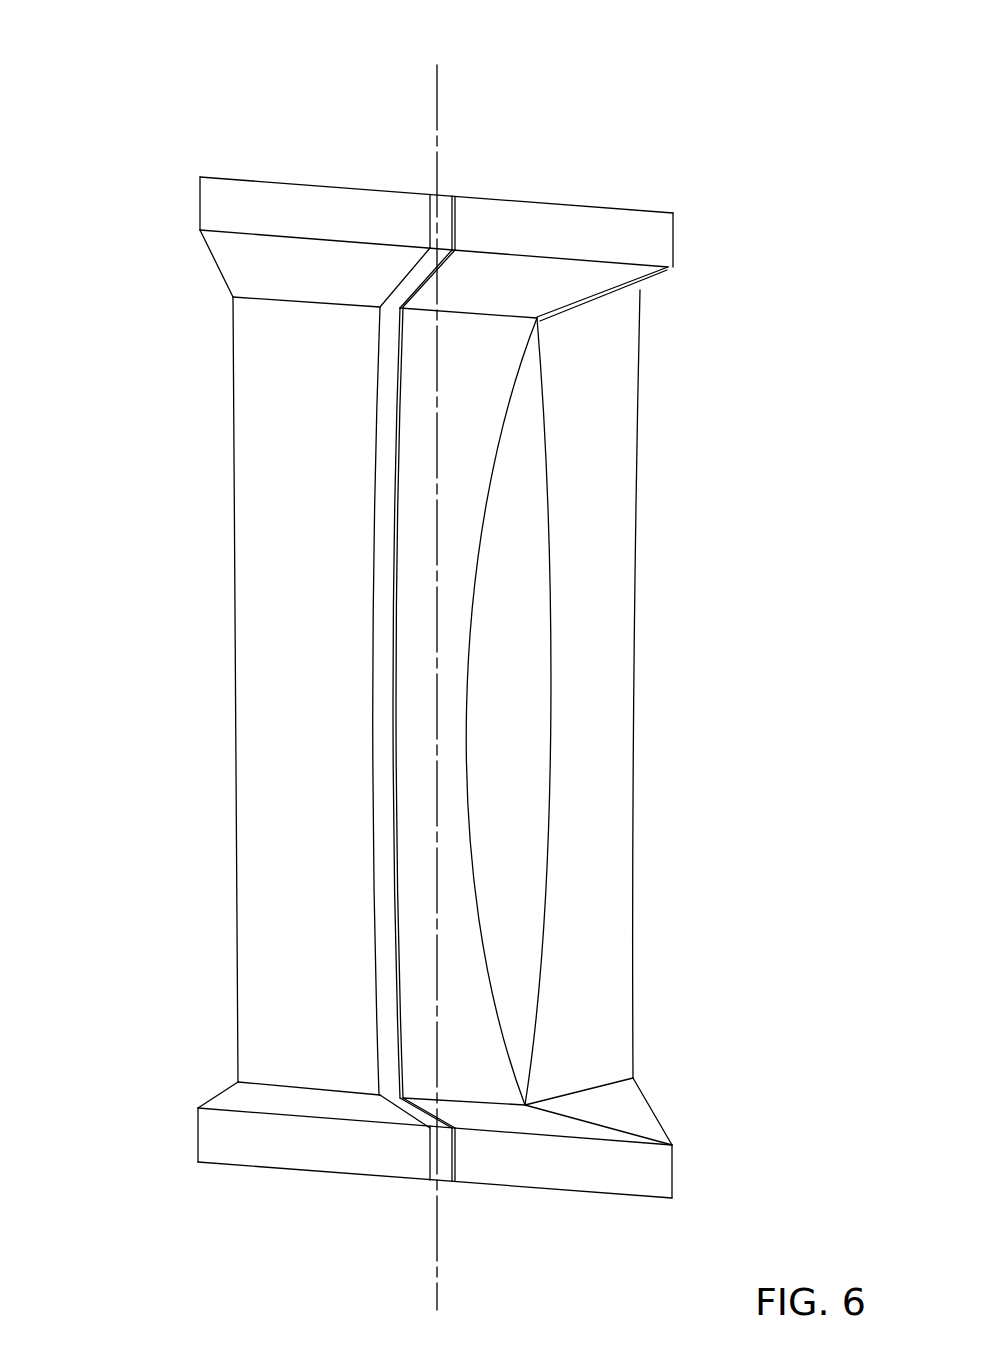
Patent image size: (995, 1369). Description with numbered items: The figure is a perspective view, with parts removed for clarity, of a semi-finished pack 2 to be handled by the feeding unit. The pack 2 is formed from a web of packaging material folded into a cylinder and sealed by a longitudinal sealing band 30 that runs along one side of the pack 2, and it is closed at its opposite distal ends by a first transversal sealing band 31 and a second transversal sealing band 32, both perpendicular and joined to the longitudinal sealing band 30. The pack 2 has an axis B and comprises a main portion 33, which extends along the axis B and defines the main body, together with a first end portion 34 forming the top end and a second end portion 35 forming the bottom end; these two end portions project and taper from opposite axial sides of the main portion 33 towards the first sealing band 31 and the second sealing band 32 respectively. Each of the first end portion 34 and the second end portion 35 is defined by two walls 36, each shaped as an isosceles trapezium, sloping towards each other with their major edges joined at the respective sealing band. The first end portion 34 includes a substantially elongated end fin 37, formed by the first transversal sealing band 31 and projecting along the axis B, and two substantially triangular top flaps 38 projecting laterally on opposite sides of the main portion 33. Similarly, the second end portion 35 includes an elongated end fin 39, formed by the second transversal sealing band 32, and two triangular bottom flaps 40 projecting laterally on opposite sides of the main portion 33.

The axis B is at (437, 117).
The pack 2 is at (725, 668).
The longitudinal sealing band 30 is at (372, 570).
The first transversal sealing band 31 is at (553, 233).
The second transversal sealing band 32 is at (300, 1147).
The main portion 33 is at (268, 795).
The first end portion 34 is at (208, 294).
The second end portion 35 is at (153, 1128).
The walls 36 is at (300, 254).
The end fin 37 is at (644, 228).
The top flaps 38 is at (220, 244).
The end fin 39 is at (505, 1160).
The bottom flaps 40 is at (227, 1100).